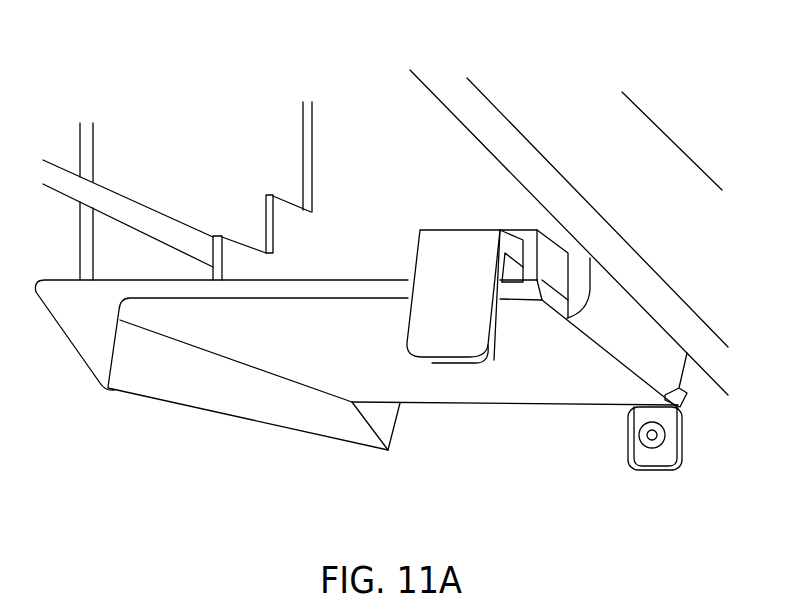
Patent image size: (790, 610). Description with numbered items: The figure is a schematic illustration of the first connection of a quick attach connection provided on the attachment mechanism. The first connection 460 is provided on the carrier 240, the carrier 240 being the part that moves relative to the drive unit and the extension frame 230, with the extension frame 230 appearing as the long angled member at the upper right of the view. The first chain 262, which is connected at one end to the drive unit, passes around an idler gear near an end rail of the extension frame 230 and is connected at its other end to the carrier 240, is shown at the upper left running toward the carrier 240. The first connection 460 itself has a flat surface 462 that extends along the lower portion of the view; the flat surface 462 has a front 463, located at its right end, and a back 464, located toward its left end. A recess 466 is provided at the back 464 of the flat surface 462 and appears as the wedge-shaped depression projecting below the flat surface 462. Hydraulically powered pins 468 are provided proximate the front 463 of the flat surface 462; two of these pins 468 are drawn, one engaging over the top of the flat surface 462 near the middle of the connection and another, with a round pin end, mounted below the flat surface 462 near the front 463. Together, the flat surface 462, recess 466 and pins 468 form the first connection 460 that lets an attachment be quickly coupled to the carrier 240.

The extension frame 230 is at (638, 163).
The first chain 262 is at (138, 217).
The carrier 240 is at (532, 460).
The first connection 460 is at (430, 421).
The flat surface 462 is at (572, 372).
The front 463 is at (640, 387).
The back 464 is at (207, 350).
The recess 466 is at (285, 407).
The hydraulically powered pins 468 is at (457, 343).